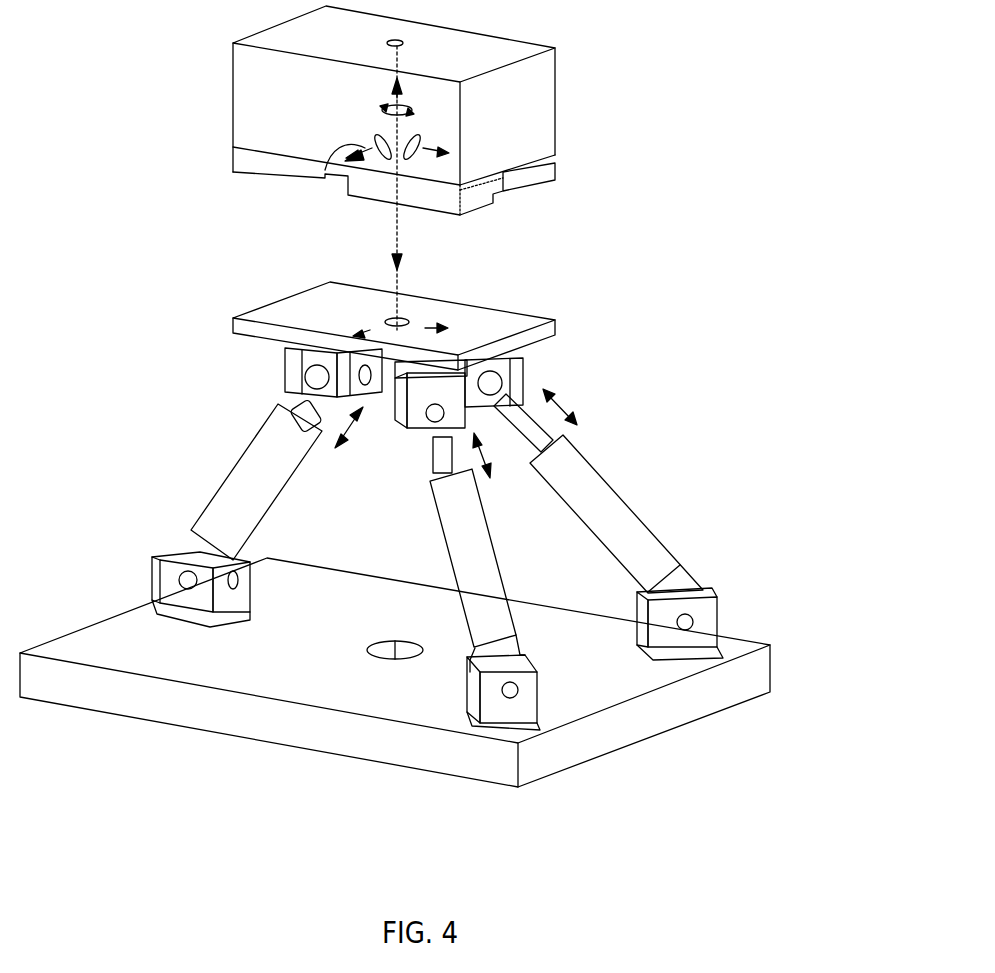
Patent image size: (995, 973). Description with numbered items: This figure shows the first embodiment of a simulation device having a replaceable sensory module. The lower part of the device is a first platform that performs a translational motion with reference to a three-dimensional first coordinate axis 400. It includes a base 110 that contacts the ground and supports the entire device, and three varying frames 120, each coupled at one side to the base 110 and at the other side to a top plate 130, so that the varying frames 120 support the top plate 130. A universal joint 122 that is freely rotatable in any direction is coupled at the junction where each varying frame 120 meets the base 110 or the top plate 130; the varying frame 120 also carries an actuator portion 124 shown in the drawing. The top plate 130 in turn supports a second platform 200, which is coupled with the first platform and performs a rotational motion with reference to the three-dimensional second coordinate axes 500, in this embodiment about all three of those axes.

The base 110 is at (662, 718).
The varying frame 120 is at (773, 473).
The universal joint 122 is at (642, 615).
The linear actuator cylinder 124 is at (645, 518).
The top plate 130 is at (520, 320).
The second platform 200 is at (556, 105).
The first coordinate axis 400 is at (393, 284).
The second coordinate axes 500 is at (325, 170).